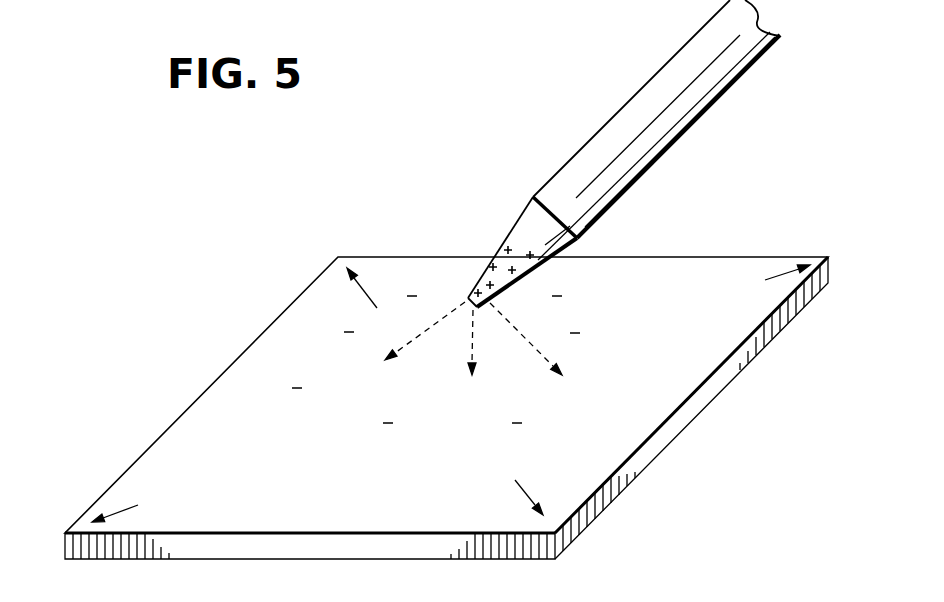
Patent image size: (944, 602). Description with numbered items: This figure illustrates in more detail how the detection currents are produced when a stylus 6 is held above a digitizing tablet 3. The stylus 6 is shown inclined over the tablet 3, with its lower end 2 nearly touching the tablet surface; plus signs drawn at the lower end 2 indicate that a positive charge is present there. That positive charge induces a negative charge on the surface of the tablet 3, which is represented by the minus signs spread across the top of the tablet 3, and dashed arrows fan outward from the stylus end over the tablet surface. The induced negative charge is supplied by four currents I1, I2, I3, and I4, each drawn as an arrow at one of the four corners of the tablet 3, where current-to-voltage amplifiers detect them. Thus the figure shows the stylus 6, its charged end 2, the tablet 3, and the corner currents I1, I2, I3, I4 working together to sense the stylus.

The tip of stylus/pen 2 is at (512, 222).
The digitizing tablet 3 is at (658, 280).
The stylus 6 is at (653, 97).
The current I1 is at (368, 292).
The current I2 is at (118, 513).
The current I3 is at (528, 494).
The current I4 is at (782, 272).